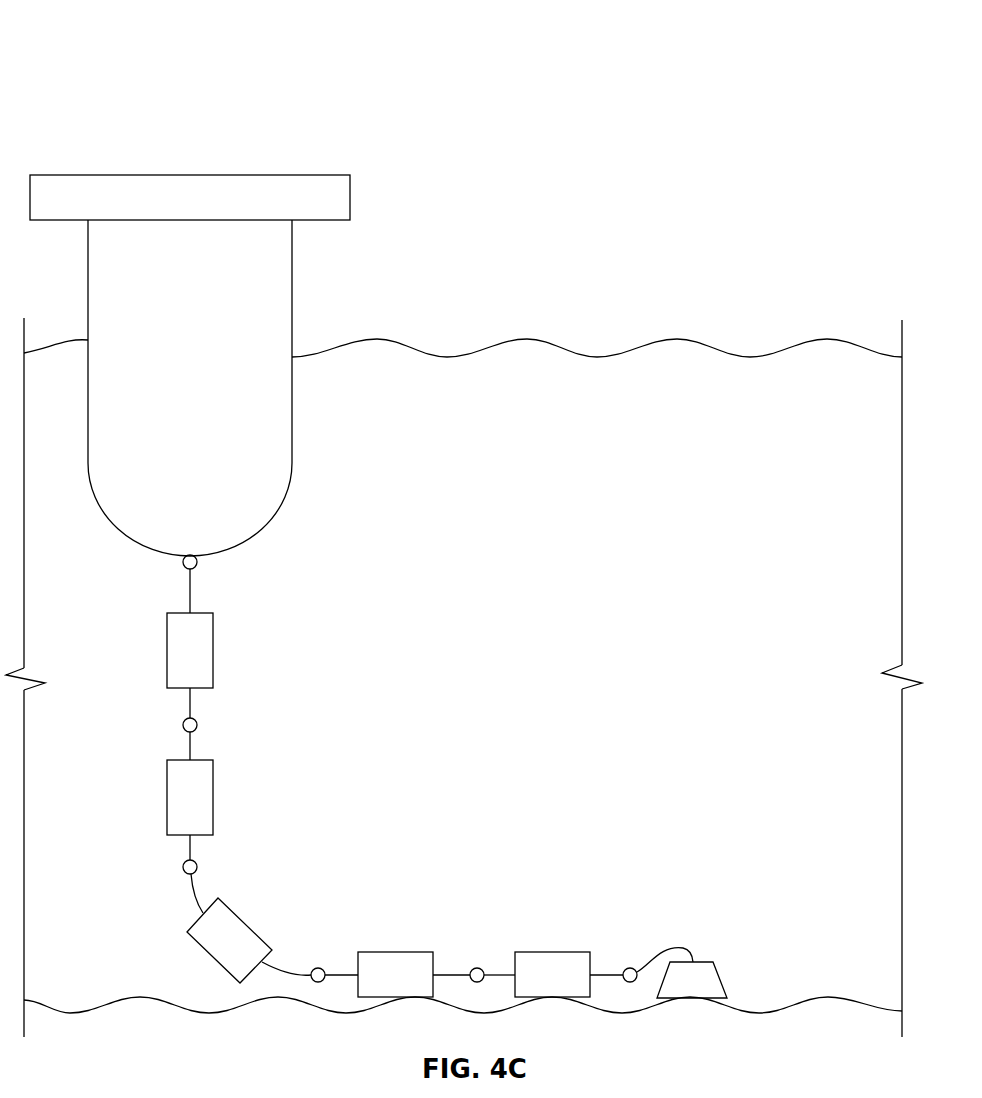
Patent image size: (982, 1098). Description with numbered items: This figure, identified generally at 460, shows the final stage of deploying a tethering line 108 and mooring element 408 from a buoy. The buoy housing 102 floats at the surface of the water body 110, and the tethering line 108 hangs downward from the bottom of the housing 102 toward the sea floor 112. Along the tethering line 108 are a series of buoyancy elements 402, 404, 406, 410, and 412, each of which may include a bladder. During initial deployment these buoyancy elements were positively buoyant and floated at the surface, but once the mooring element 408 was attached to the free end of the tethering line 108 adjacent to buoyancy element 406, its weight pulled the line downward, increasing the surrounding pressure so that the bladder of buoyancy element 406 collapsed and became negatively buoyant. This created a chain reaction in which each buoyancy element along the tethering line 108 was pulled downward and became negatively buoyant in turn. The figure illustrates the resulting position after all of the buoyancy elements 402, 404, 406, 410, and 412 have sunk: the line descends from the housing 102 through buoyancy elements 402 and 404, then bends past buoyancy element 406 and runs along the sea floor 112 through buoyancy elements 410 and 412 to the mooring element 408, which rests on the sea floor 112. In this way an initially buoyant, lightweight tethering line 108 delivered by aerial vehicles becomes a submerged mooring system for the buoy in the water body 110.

The system 460 is at (112, 45).
The housing 102 is at (292, 300).
The water body 110 is at (849, 393).
The sea floor 112 is at (875, 1008).
The tethering line 108 is at (188, 700).
The buoyancy element 402 is at (213, 635).
The buoyancy element 404 is at (213, 782).
The buoyancy element 406 is at (237, 915).
The mooring element 408 is at (720, 968).
The buoyancy element 410 is at (388, 952).
The buoyancy element 412 is at (546, 952).